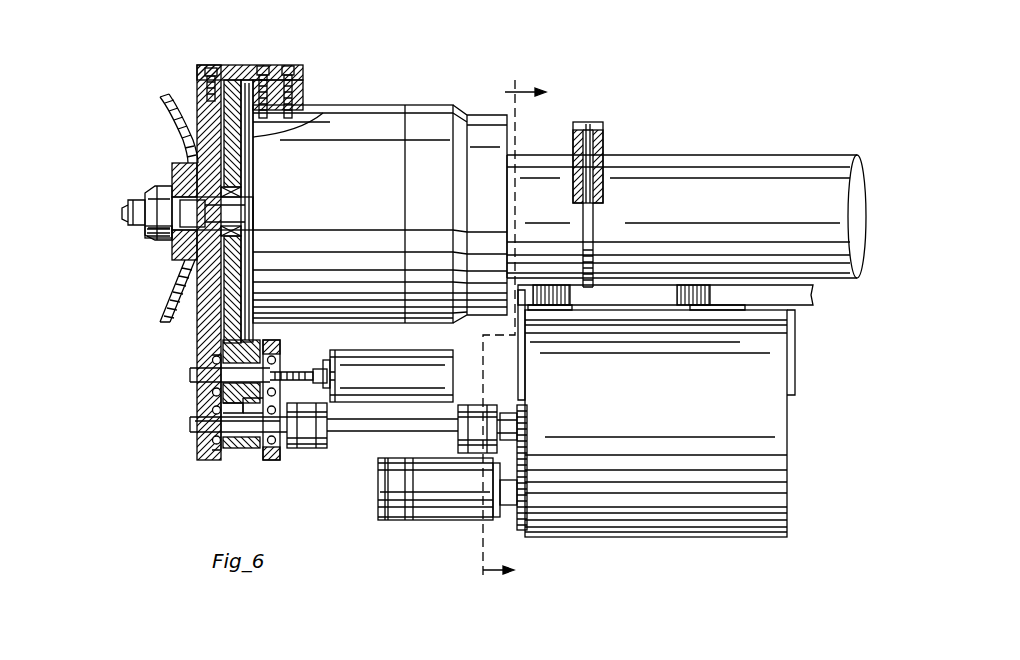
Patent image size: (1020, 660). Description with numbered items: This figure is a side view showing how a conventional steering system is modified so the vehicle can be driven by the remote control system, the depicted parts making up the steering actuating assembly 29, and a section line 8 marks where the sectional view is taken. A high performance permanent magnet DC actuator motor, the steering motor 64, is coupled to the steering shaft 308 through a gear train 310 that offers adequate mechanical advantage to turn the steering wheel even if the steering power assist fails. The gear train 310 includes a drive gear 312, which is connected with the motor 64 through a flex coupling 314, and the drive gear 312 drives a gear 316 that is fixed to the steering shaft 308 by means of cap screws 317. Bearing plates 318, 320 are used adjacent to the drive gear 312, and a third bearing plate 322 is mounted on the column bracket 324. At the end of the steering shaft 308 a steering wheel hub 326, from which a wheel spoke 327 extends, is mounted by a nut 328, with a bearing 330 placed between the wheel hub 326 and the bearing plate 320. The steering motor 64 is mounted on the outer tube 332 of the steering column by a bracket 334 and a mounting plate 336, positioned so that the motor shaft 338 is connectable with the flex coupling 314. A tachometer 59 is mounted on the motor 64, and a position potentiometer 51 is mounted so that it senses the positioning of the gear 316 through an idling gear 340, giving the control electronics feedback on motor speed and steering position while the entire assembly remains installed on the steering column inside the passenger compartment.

The section line 8- 8 is at (521, 332).
The steering actuating assembly 29 is at (697, 81).
The position potentiometer 51 is at (433, 353).
The tachometer 59 is at (443, 522).
The steering motor 64 is at (627, 540).
The steering shaft 308 is at (128, 233).
The gear train 310 is at (157, 372).
The drive gear 312 is at (238, 455).
The flex coupling 314 is at (310, 450).
The gear 316 is at (238, 80).
The cap screws 317 is at (252, 200).
The bearing plate 318 is at (273, 462).
The bearing plate 320 is at (193, 403).
The third bearing plate 322 is at (278, 65).
The column bracket 324 is at (378, 110).
The steering wheel hub 326 is at (172, 176).
The wheel spoke 327 is at (165, 306).
The nut 328 is at (154, 242).
The bearing 330 is at (185, 263).
The outer tube 332 is at (687, 158).
The bracket 334 is at (597, 122).
The mounting plate 336 is at (660, 305).
The motor shaft 338 is at (528, 424).
The idling gear 340 is at (255, 340).